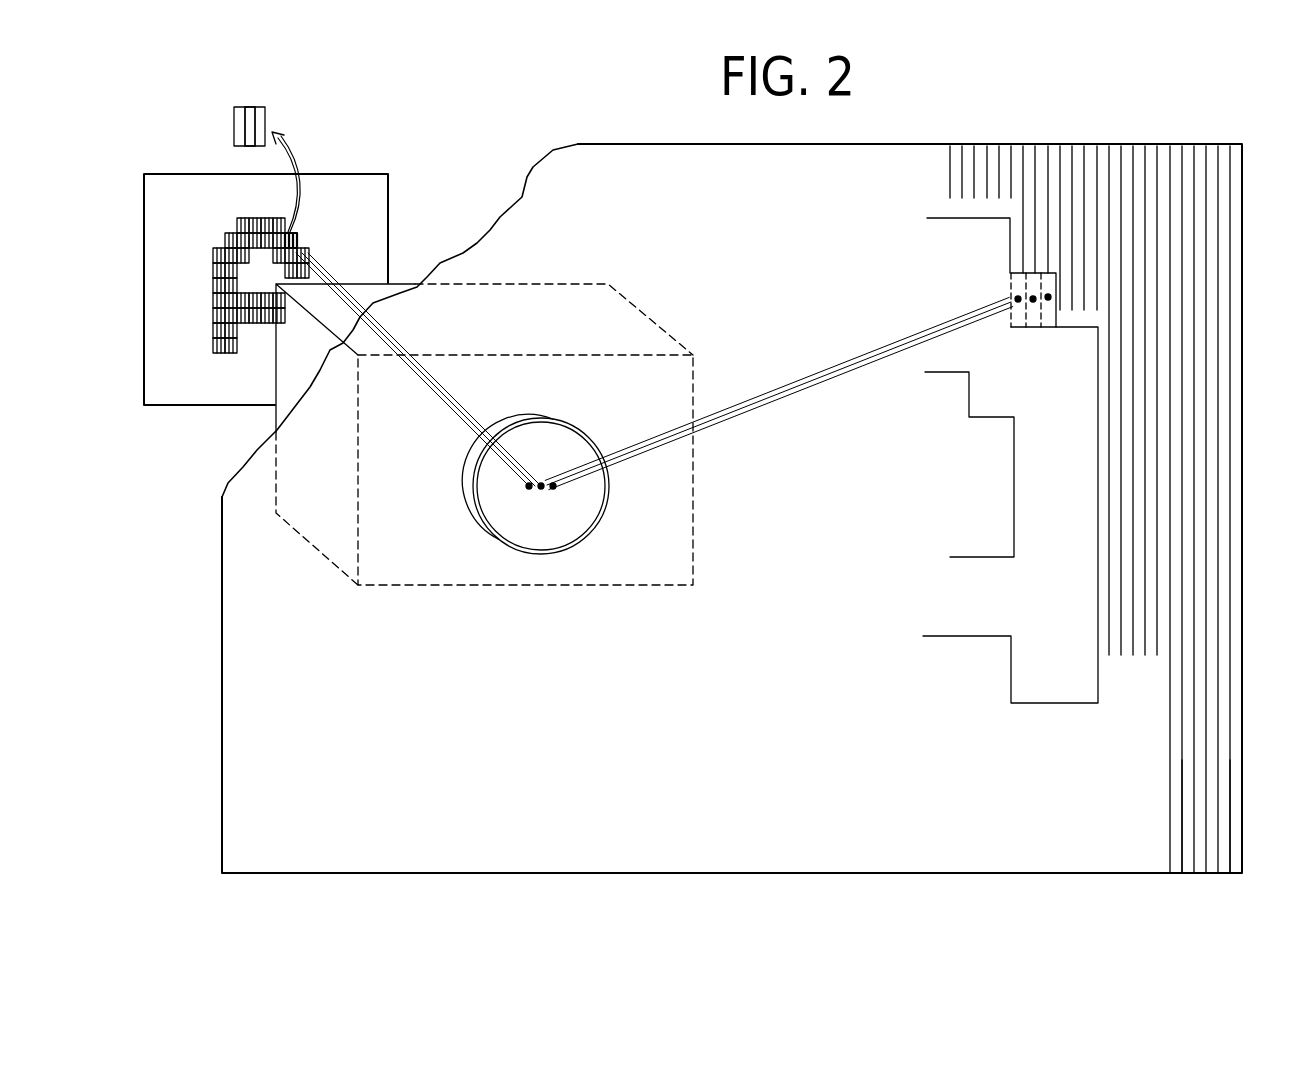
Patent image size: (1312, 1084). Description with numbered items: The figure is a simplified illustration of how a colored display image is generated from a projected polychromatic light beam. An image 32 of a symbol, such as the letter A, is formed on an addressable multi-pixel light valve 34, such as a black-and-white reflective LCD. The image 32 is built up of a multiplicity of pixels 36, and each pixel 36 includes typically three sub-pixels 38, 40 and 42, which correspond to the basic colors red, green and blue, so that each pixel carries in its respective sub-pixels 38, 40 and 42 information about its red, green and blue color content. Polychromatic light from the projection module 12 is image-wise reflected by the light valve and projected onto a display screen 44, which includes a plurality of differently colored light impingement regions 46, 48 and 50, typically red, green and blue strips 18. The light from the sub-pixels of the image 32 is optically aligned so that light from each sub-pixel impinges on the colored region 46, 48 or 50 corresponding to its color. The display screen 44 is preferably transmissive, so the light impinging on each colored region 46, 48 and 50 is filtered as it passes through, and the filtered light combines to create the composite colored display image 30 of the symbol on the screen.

The projection module 12 is at (562, 295).
The red, green and blue strips 18 is at (1048, 273).
The colored display image 30 is at (1018, 668).
The image 32 is at (200, 283).
The addressable multi-pixel light valve 34 is at (185, 215).
The pixel 36 is at (297, 237).
The sub-pixel 38 is at (240, 107).
The sub-pixel 40 is at (248, 107).
The sub-pixel 42 is at (258, 107).
The display screen 44 is at (361, 835).
The colored light impingement region 46 is at (1210, 838).
The colored light impingement region 48 is at (1222, 841).
The colored light impingement region 50 is at (1237, 858).